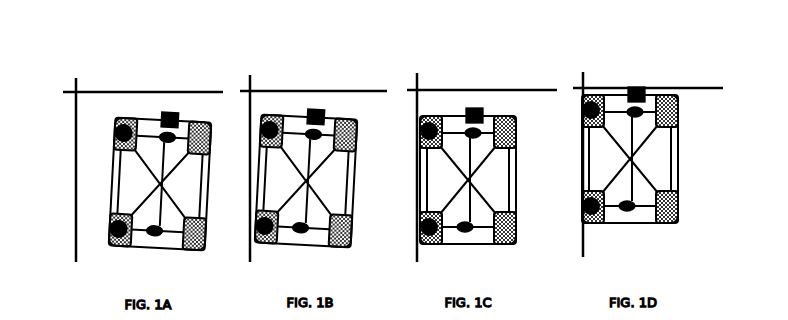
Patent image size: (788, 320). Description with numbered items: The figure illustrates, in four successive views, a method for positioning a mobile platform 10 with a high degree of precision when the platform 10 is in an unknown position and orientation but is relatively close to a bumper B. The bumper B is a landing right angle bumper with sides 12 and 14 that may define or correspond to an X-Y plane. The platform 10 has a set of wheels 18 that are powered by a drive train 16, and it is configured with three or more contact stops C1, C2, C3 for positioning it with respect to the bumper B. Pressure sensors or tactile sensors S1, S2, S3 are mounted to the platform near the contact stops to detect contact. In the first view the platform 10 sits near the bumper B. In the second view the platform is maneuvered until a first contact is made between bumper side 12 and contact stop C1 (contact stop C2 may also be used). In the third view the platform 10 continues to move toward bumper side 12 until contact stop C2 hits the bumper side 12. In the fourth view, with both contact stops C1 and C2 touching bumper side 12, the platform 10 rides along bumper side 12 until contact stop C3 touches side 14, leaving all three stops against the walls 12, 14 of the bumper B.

In FIG. 1A, the bumper B is at (74, 90).
In FIG. 1B, the bumper B is at (253, 89).
In FIG. 1C, the bumper B is at (420, 88).
In FIG. 1D, the bumper B is at (586, 87).
In FIG. 1A, the bumper side 12 is at (75, 120).
In FIG. 1B, the bumper side 12 is at (248, 258).
In FIG. 1C, the bumper side 12 is at (415, 258).
In FIG. 1D, the bumper side 12 is at (582, 238).
In FIG. 1A, the bumper side 14 is at (105, 91).
In FIG. 1B, the bumper side 14 is at (279, 89).
In FIG. 1C, the bumper side 14 is at (526, 88).
In FIG. 1D, the bumper side 14 is at (684, 87).
In FIG. 1A, the mobile platform 10 is at (137, 193).
In FIG. 1B, the mobile platform 10 is at (352, 120).
In FIG. 1C, the mobile platform 10 is at (517, 200).
In FIG. 1D, the mobile platform 10 is at (646, 226).
In FIG. 1A, the drive train 16 is at (157, 210).
In FIG. 1D, the drive train 16 is at (643, 172).
In FIG. 1D, the wheels 18 is at (679, 117).
In FIG. 1A, the contact stop C1 is at (107, 230).
In FIG. 1B, the contact stop C1 is at (262, 223).
In FIG. 1C, the contact stop C1 is at (425, 223).
In FIG. 1D, the contact stop C1 is at (590, 205).
In FIG. 1A, the contact stop C2 is at (118, 128).
In FIG. 1B, the contact stop C2 is at (272, 131).
In FIG. 1C, the contact stop C2 is at (432, 127).
In FIG. 1D, the contact stop C2 is at (605, 118).
In FIG. 1A, the contact stop C3 is at (176, 113).
In FIG. 1B, the contact stop C3 is at (322, 110).
In FIG. 1C, the contact stop C3 is at (477, 111).
In FIG. 1D, the contact stop C3 is at (640, 86).
In FIG. 1A, the sensor S1 is at (128, 246).
In FIG. 1B, the sensor S1 is at (277, 243).
In FIG. 1C, the sensor S1 is at (444, 245).
In FIG. 1D, the sensor S1 is at (603, 224).
In FIG. 1A, the sensor S2 is at (160, 112).
In FIG. 1B, the sensor S2 is at (286, 116).
In FIG. 1C, the sensor S2 is at (446, 117).
In FIG. 1D, the sensor S2 is at (604, 97).
In FIG. 1A, the sensor S3 is at (176, 135).
In FIG. 1B, the sensor S3 is at (322, 132).
In FIG. 1C, the sensor S3 is at (477, 132).
In FIG. 1D, the sensor S3 is at (645, 106).